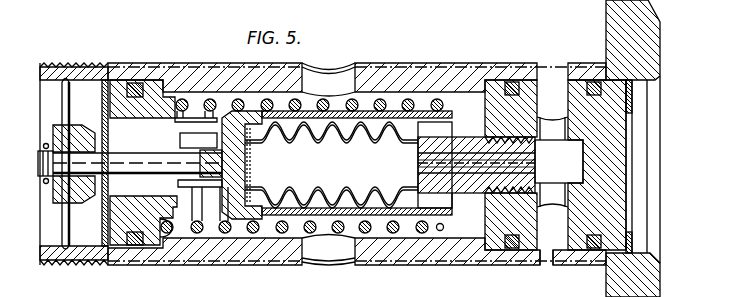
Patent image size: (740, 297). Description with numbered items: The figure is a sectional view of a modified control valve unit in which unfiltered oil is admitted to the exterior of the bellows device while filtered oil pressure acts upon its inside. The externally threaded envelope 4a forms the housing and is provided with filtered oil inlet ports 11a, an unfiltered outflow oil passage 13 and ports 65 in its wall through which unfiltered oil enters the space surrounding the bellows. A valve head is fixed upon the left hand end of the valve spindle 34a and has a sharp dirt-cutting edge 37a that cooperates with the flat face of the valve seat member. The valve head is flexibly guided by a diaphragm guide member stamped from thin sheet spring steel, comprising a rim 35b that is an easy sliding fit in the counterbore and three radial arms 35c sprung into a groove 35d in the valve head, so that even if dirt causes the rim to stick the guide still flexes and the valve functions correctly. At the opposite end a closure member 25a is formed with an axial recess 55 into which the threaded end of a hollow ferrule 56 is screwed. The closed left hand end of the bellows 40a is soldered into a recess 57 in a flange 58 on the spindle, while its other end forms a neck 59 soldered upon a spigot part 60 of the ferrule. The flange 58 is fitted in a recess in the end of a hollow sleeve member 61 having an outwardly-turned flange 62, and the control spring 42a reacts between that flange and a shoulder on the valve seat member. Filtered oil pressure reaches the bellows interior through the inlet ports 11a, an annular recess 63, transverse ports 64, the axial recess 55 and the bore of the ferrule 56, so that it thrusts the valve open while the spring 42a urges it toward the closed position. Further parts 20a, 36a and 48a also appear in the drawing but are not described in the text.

The envelope 4a is at (240, 252).
The filtered oil inlet ports 11a is at (550, 252).
The unfiltered outflow oil passage 13 is at (58, 100).
The end retainer block 20a is at (160, 238).
The closure member 25a is at (495, 82).
The valve spindle 34a is at (163, 114).
The rim 35b is at (59, 258).
The radial arms 35c is at (46, 80).
The groove 35d is at (60, 200).
The piston rod 36a is at (82, 157).
The sharp dirt-cutting edge 37a is at (88, 188).
The bellows 40a is at (404, 158).
The control spring 42a is at (366, 233).
The spring retainer 48a is at (155, 222).
The axial recess 55 is at (590, 170).
The hollow ferrule 56 is at (412, 195).
The recess 57 is at (248, 176).
The flange 58 is at (248, 155).
The neck 59 is at (440, 232).
The spigot part 60 is at (444, 159).
The hollow sleeve member 61 is at (366, 116).
The outwardly-turned flange 62 is at (452, 196).
The annular recess 63 is at (558, 88).
The transverse ports 64 is at (542, 196).
The ports 65 is at (322, 252).